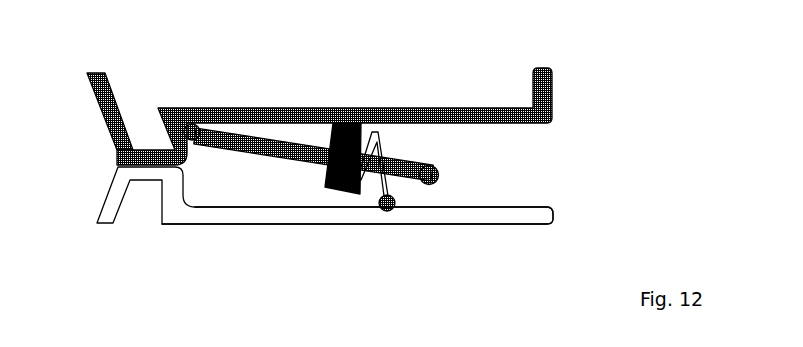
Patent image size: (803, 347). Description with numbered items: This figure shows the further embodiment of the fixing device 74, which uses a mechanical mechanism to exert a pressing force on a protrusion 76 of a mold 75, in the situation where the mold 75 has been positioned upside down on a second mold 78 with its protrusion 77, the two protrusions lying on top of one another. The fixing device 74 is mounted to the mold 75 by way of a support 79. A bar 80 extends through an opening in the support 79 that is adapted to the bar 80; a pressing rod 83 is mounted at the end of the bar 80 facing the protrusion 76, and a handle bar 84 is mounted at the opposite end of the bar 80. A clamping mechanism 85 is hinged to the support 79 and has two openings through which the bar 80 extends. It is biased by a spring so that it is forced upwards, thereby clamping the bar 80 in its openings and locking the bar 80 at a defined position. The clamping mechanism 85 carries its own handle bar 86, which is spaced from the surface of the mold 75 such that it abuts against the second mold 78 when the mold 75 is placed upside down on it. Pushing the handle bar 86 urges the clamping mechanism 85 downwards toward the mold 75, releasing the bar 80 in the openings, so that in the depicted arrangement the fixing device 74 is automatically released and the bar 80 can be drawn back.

The fixing device 74 is at (530, 170).
The mold 75 is at (553, 99).
The protrusion 76 is at (132, 148).
The protrusion 77 is at (120, 173).
The second mold 78 is at (553, 216).
The support 79 is at (326, 190).
The bar 80 is at (253, 140).
The pressing rod 83 is at (192, 124).
The handle bar 84 is at (431, 167).
The clamping mechanism 85 is at (375, 132).
The handle bar 86 is at (386, 211).